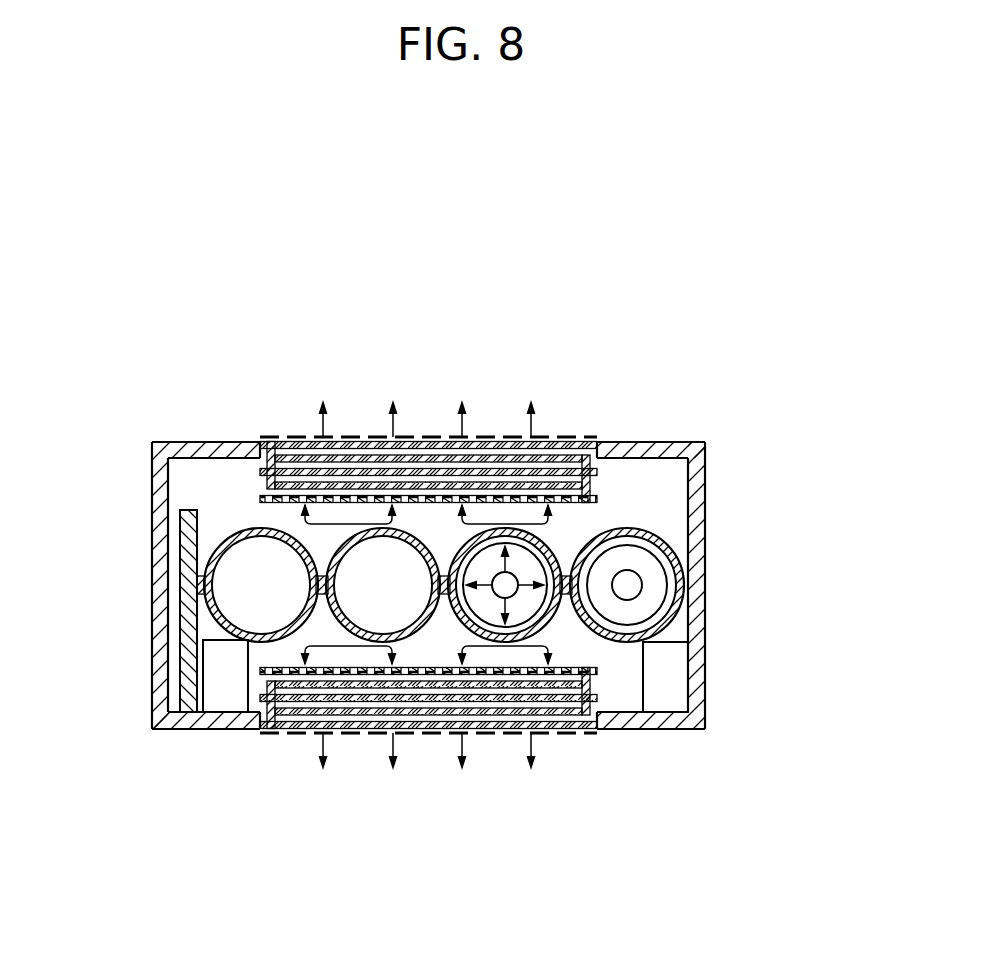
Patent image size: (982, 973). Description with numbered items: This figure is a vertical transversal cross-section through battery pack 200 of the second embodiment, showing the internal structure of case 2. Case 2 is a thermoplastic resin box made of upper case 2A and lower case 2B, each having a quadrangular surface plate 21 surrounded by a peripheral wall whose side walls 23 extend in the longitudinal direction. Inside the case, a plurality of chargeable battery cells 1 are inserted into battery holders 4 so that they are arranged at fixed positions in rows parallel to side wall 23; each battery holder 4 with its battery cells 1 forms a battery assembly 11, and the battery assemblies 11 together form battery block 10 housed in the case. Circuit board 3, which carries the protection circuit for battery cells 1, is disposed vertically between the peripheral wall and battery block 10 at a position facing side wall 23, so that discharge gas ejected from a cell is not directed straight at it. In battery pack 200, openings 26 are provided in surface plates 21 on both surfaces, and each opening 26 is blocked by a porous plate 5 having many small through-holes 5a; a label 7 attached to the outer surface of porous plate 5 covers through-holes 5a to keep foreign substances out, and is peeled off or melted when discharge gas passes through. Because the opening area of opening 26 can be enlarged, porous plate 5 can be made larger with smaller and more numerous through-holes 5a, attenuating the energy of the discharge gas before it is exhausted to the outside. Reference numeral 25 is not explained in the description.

The battery pack 200 is at (727, 258).
The case 2 is at (742, 380).
The upper case 2A is at (130, 309).
The lower case 2B is at (127, 855).
The surface plate 21 is at (229, 453).
The side wall 23 is at (162, 497).
The connecting portion 25 is at (230, 528).
The circuit board 3 is at (188, 548).
The battery cell 1 is at (445, 587).
The battery holder 4 is at (665, 534).
The porous plate 5 is at (460, 580).
The through-hole 5a is at (351, 450).
The label 7 is at (560, 437).
The opening 26 is at (612, 455).
The battery assembly 11 is at (673, 523).
The battery block 10 is at (519, 585).